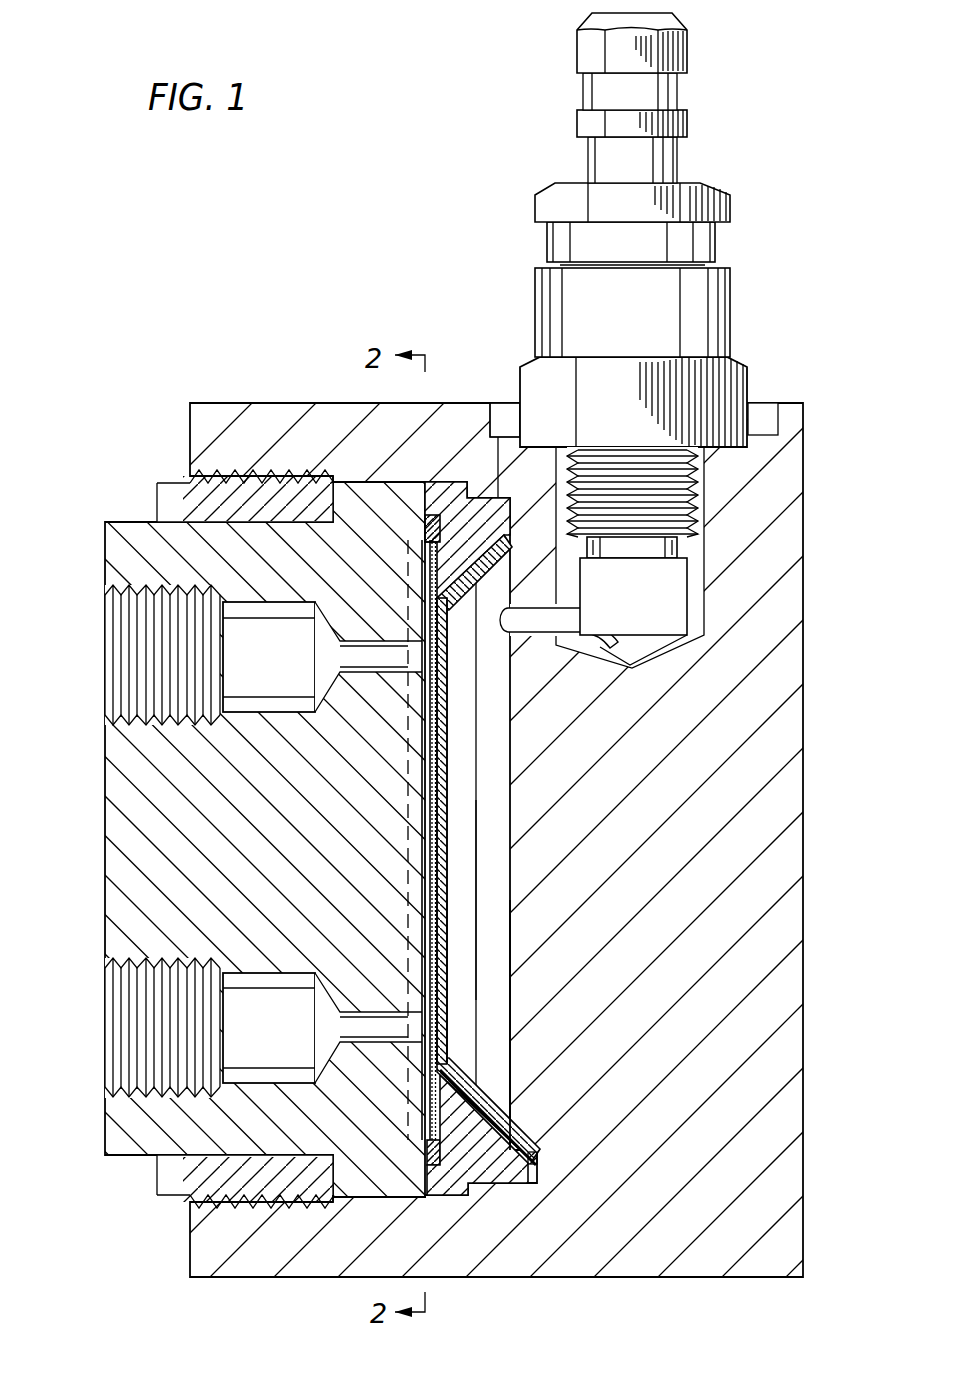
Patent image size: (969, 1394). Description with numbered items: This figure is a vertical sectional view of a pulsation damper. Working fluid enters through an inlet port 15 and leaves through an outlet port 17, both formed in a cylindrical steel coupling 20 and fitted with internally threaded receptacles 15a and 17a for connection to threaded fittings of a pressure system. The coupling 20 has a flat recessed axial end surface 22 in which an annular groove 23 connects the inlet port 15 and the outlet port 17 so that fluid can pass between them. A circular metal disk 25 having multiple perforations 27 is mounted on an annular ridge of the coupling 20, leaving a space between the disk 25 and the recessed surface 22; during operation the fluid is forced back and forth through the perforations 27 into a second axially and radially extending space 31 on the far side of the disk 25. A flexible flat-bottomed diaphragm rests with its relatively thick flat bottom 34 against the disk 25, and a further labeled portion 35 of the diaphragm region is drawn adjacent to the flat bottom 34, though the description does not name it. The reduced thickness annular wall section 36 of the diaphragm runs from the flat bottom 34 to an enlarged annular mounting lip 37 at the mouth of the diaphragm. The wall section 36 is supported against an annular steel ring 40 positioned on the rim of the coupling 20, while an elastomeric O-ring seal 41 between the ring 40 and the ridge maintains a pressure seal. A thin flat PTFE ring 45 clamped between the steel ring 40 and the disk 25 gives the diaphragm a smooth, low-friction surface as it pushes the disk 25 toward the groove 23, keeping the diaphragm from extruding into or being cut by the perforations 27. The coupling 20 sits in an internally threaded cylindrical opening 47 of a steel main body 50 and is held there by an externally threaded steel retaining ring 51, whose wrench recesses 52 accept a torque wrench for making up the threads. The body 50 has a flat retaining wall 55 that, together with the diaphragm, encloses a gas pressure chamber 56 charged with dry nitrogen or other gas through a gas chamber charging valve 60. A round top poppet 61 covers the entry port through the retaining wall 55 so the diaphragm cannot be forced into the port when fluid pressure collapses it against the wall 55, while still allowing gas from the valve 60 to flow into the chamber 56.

The inlet port 15 is at (340, 1025).
The internally threaded receptacle 15a is at (130, 1050).
The outlet port 17 is at (350, 655).
The internally threaded receptacle 17a is at (130, 630).
The cylindrical steel coupling 20 is at (110, 850).
The flat recessed axial end surface 22 is at (430, 820).
The annular groove 23 is at (408, 763).
The circular metal disk 25 is at (445, 925).
The perforations 27 is at (445, 978).
The second axially and radially extending space 31 is at (440, 752).
The flat bottom 34 is at (445, 793).
The electrode surface 35 is at (445, 833).
The reduced thickness annular wall section 36 is at (505, 1112).
The enlarged annular mounting lip 37 is at (540, 1162).
The annular steel ring 40 is at (488, 1162).
The elastomeric O-ring seal 41 is at (425, 1152).
The thin flat PTFE ring 45 is at (455, 727).
The internally threaded cylindrical opening 47 is at (360, 490).
The steel main body 50 is at (800, 760).
The externally threaded steel retaining ring 51 is at (200, 490).
The wrench recesses 52 is at (165, 1175).
The flat retaining wall 55 is at (508, 1010).
The gas pressure chamber 56 is at (503, 873).
The gas chamber charging valve 60 is at (660, 162).
The round top poppet 61 is at (500, 628).